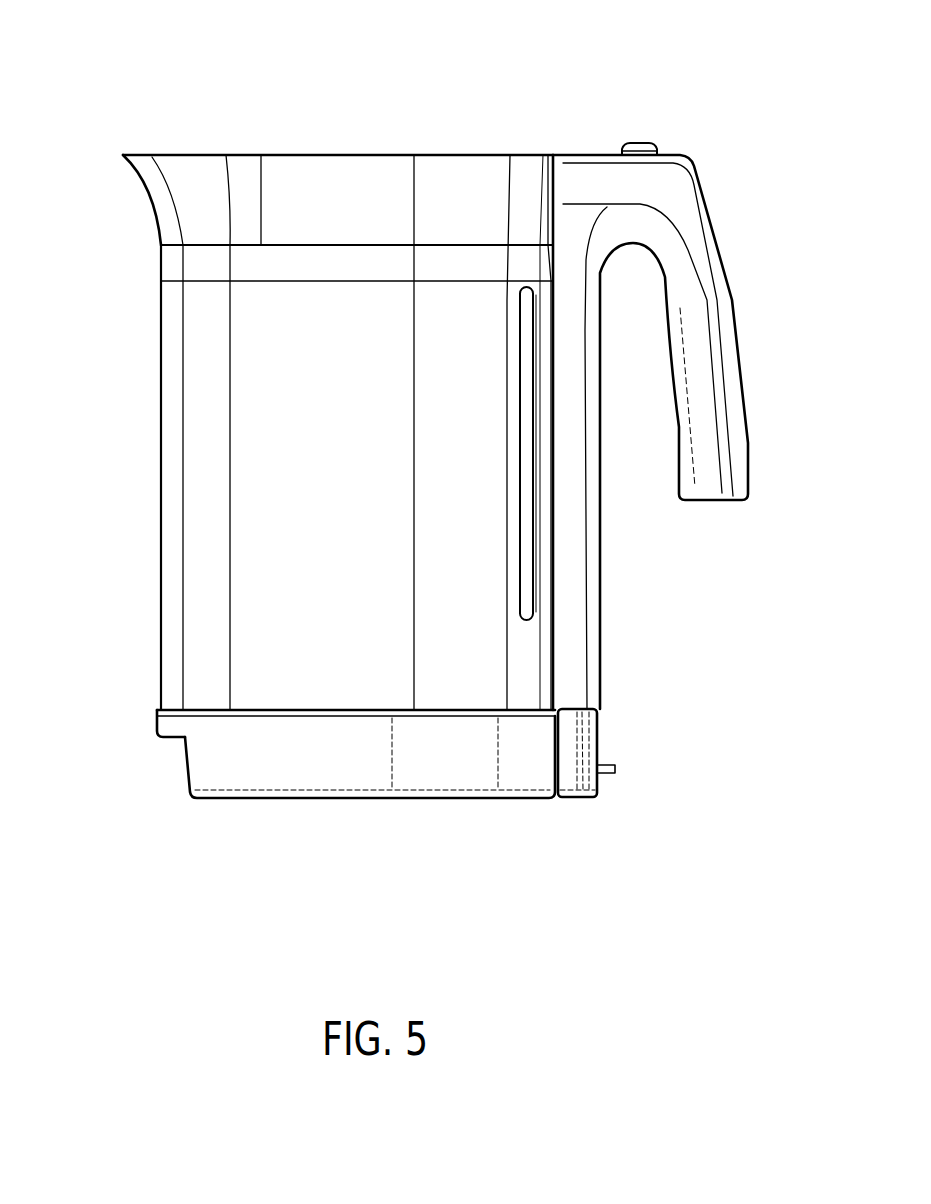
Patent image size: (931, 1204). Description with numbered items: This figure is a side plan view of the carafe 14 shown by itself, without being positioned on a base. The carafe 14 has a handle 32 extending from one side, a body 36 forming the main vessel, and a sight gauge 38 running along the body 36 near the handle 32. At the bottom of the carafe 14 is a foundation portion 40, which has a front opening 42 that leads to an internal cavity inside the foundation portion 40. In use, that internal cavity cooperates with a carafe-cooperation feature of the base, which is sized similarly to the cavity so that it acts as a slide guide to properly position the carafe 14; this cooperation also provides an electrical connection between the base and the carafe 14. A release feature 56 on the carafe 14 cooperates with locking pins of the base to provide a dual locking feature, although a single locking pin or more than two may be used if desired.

The carafe 14 is at (392, 88).
The handle 32 is at (733, 368).
The body 36 is at (368, 475).
The sight gauge 38 is at (528, 562).
The foundation portion 40 is at (158, 731).
The front opening 42 is at (148, 773).
The release feature 56 is at (617, 770).